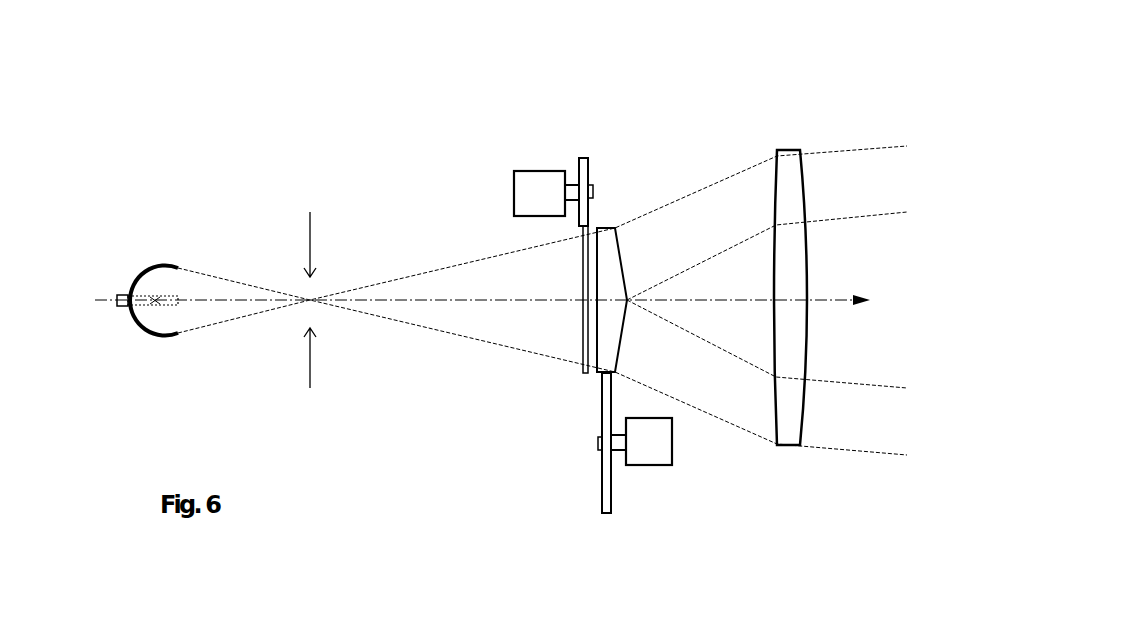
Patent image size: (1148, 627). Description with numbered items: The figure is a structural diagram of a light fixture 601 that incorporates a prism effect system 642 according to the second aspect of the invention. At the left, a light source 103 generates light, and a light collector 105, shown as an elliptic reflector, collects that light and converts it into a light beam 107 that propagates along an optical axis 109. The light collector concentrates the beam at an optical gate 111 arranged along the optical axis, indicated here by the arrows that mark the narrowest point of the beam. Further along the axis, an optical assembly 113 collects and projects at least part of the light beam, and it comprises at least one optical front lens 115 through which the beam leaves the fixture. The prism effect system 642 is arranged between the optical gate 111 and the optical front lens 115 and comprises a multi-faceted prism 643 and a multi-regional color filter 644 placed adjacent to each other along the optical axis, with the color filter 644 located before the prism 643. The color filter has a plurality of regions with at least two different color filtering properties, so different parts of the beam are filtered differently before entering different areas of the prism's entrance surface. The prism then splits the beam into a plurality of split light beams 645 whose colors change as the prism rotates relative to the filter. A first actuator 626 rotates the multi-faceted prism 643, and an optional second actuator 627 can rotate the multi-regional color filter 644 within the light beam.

The optical system 601 is at (267, 110).
The light source 103 is at (157, 300).
The light collector 105 is at (168, 340).
The light beam 107 is at (380, 283).
The optical gate 111 is at (307, 405).
The prism effect system 642 is at (567, 467).
The multi-faceted prism 643 is at (607, 302).
The multi-regional color filter 644 is at (585, 328).
The split light beams 645 is at (695, 235).
The first actuator 626 is at (652, 465).
The second actuator 627 is at (539, 193).
The optical axis 109 is at (841, 302).
The optical assembly 113 is at (780, 468).
The optical front lens 115 is at (800, 177).